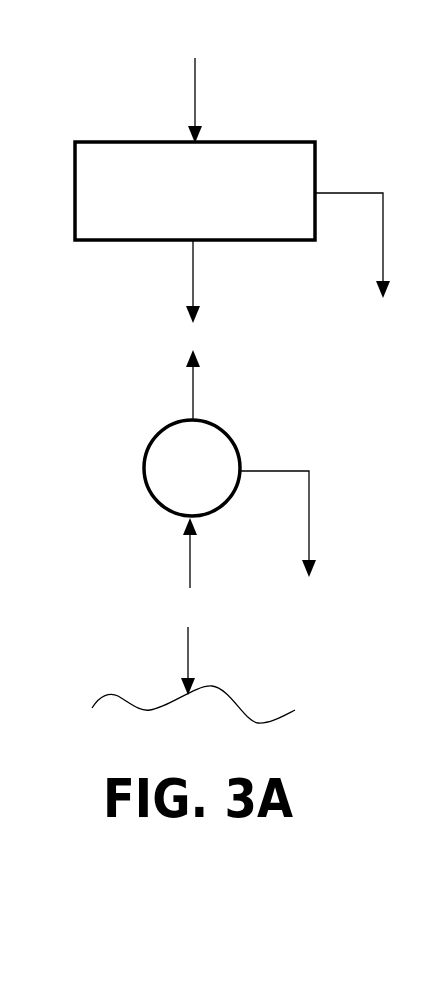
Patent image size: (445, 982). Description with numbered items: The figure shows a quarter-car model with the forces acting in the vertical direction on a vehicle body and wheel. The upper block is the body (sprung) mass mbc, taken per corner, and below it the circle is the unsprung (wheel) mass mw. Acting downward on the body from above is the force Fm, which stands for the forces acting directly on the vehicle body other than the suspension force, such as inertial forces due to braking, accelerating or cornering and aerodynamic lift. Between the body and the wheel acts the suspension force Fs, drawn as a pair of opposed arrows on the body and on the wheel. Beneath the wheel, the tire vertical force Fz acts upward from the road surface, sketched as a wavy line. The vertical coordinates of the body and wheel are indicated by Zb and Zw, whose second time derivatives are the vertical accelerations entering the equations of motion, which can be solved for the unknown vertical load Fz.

The body (sprung) mass mbc is at (195, 191).
The forces acting directly on the vehicle body Fm is at (236, 100).
The vertical displacement of body Zb is at (369, 245).
The suspension force Fs is at (221, 330).
The unsprung (wheel) mass mw is at (192, 468).
The vertical displacement of wheel Zw is at (303, 524).
The tire vertical force Fz is at (193, 620).